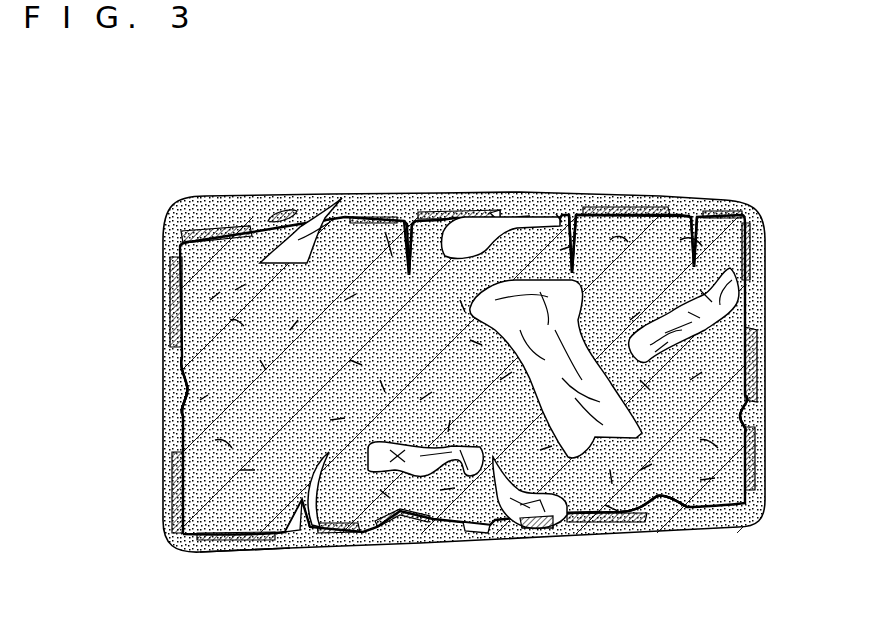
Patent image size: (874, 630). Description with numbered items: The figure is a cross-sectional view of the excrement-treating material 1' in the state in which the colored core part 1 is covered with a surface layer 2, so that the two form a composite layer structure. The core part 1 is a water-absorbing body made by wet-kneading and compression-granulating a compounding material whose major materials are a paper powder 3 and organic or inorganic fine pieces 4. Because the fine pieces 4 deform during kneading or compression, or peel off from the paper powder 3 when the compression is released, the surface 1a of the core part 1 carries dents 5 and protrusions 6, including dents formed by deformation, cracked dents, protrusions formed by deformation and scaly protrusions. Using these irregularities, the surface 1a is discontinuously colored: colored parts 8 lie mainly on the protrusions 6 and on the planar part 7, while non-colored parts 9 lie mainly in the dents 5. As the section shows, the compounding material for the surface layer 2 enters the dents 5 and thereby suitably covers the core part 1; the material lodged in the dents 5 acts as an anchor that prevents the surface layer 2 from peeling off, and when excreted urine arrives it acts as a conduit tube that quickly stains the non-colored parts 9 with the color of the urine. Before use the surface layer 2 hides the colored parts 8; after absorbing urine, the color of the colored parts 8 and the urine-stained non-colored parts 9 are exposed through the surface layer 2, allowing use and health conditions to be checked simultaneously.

The core part 1 is at (464, 410).
The excrement-treating material 1' is at (425, 372).
The surface of the core part 1a is at (232, 556).
The surface layer 2 is at (752, 222).
The paper powder 3 is at (243, 258).
The fine pieces 4 is at (389, 240).
The dents 5 is at (181, 383).
The protrusions 6 is at (180, 405).
The planar part 7 is at (642, 207).
The colored parts 8 is at (203, 232).
The non-colored parts 9 is at (410, 255).